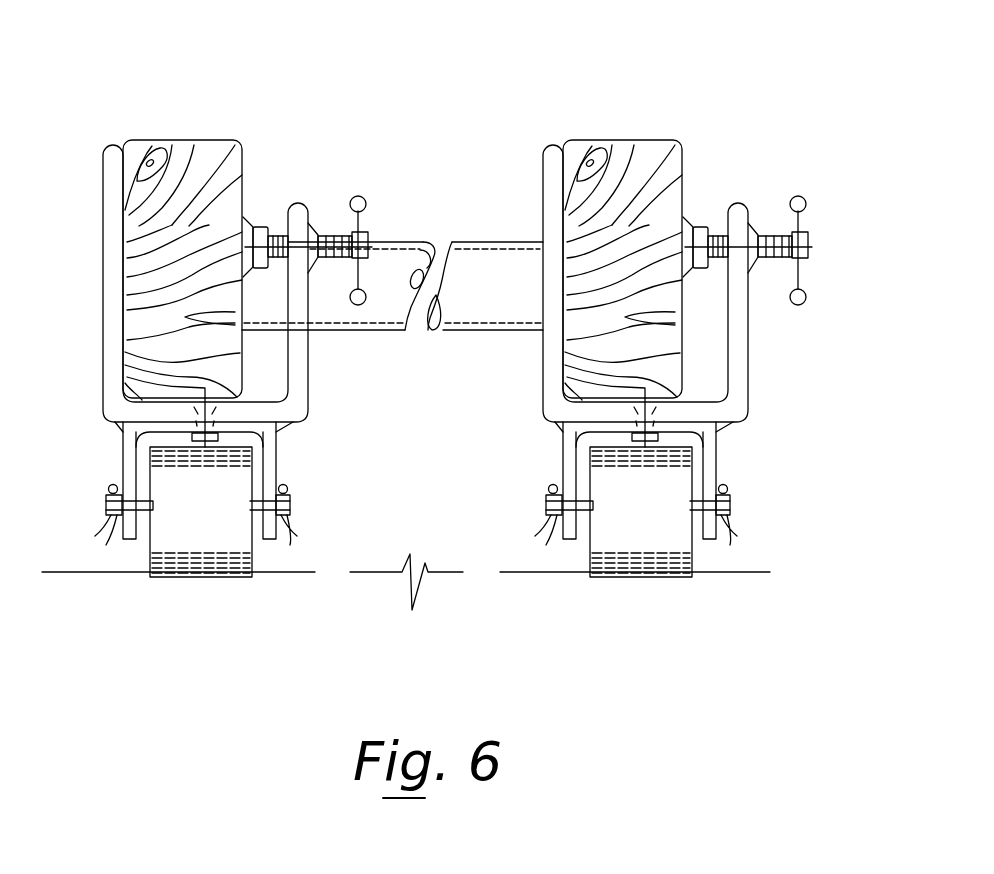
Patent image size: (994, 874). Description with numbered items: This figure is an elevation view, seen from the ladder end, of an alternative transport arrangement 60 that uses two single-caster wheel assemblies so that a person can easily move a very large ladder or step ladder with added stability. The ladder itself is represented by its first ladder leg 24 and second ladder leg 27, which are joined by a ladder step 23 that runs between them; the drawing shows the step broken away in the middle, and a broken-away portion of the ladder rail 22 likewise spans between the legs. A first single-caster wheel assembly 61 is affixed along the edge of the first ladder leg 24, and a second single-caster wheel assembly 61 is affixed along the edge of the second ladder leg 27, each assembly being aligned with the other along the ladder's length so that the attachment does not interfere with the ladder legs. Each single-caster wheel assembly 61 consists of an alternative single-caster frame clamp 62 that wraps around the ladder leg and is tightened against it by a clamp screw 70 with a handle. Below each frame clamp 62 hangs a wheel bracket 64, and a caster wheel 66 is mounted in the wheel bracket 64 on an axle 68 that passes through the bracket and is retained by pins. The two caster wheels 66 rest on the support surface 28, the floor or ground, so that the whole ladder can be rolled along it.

The rail / pipe 22 is at (427, 147).
The ladder step 23 is at (483, 242).
The first ladder leg 24 is at (185, 140).
The second ladder leg 27 is at (640, 140).
The support surface 28 is at (760, 572).
The alternative transport with two single caster wheel assemblies 60 is at (693, 54).
The alternative single caster wheel assembly 61 is at (92, 431).
The alternative single caster frame clamp 62 is at (305, 376).
The wheel bracket 64 is at (278, 453).
The caster wheel 66 is at (148, 548).
The axle 68 is at (290, 507).
The clamp screw 70 is at (368, 245).